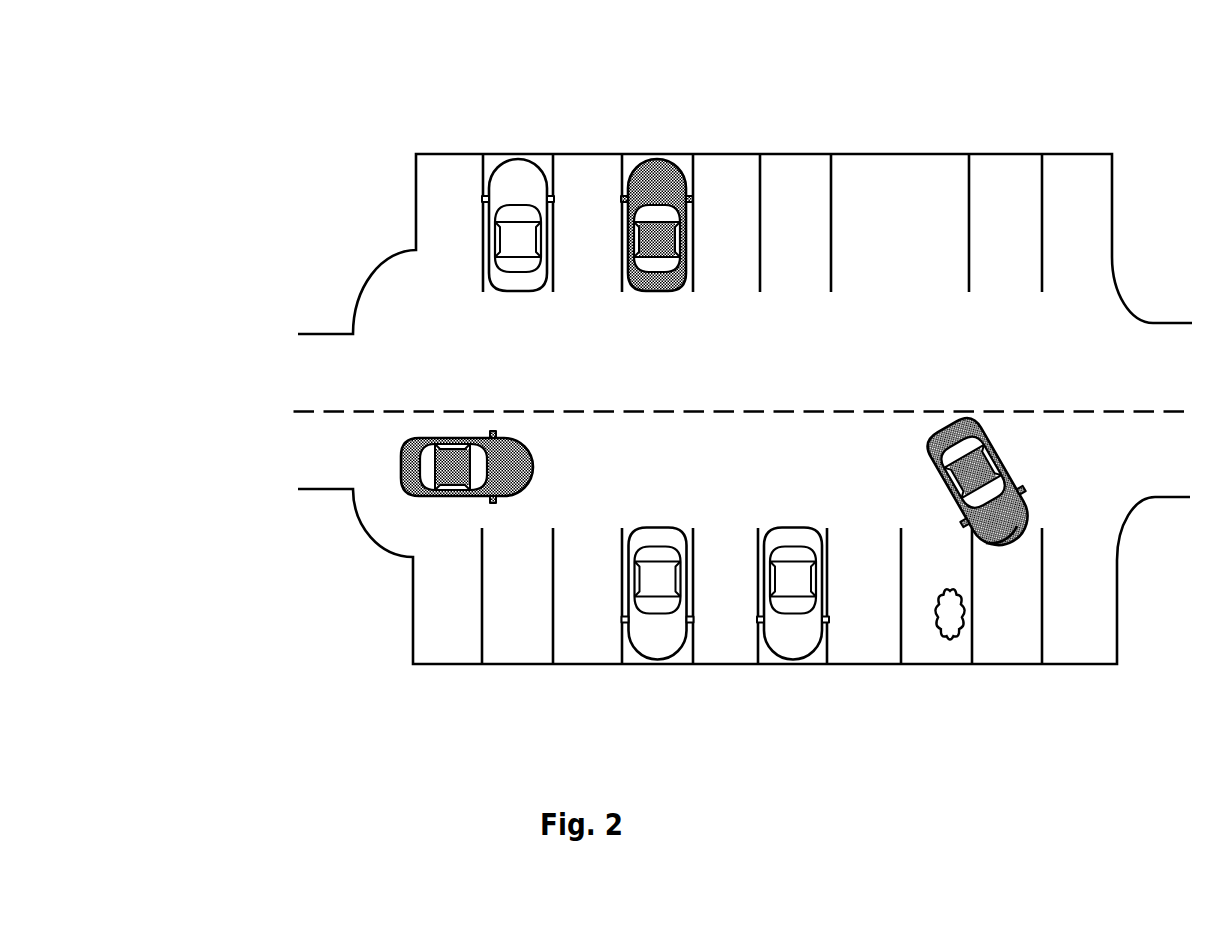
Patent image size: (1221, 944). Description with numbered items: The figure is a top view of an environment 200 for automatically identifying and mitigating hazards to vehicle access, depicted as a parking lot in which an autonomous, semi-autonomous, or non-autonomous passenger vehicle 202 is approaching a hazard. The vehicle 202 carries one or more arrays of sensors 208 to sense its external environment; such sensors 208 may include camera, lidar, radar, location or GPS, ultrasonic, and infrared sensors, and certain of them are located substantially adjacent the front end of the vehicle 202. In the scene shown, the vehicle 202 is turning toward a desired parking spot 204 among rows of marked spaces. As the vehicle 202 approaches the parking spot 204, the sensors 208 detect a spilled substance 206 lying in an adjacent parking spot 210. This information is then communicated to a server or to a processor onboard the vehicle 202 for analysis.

The environment 200 is at (255, 107).
The passenger vehicle 202 is at (1029, 506).
The parking spot 204 is at (1009, 652).
The spilled substance 206 is at (950, 640).
The sensors 208 is at (1008, 547).
The adjacent parking spot 210 is at (910, 566).